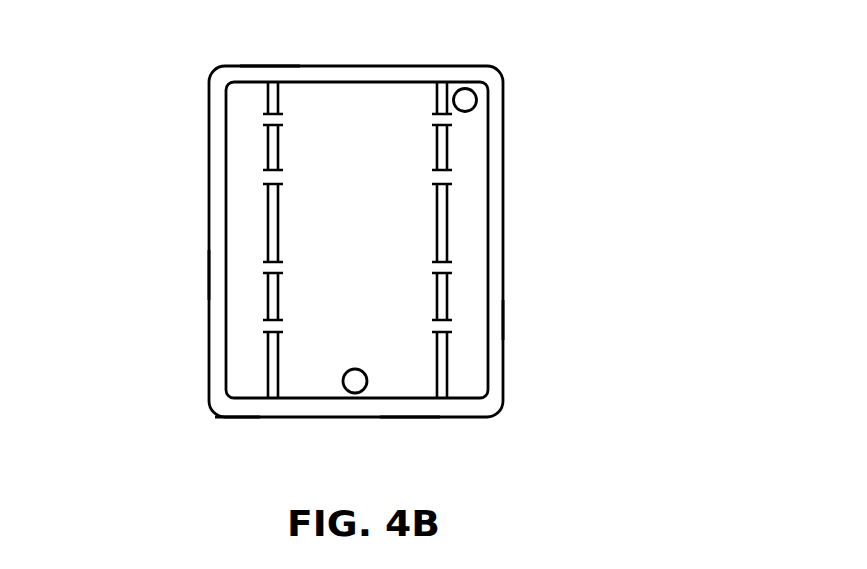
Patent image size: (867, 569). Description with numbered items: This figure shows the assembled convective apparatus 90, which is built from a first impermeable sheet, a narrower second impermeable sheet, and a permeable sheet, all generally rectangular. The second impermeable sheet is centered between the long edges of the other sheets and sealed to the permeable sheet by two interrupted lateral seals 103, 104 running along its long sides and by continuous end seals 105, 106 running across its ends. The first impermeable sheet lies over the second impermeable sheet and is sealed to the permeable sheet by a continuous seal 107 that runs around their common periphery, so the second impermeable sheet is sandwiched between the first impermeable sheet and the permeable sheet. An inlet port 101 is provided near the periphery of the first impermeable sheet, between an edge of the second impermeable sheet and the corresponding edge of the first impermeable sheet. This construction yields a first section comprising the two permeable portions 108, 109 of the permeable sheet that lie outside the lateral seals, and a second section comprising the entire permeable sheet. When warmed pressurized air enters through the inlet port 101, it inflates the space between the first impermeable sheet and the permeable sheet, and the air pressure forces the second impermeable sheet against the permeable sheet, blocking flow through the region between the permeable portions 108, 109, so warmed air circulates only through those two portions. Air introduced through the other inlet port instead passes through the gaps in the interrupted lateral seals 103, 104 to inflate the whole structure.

The convective apparatus 90 is at (523, 170).
The inlet port 101 is at (468, 88).
The interrupted lateral seal 103 is at (275, 372).
The interrupted lateral seal 104 is at (445, 368).
The continuous end seal 105 is at (428, 417).
The continuous end seal 106 is at (367, 78).
The continuous seal 107 is at (256, 70).
The permeable portion 108 is at (237, 214).
The permeable portion 109 is at (467, 282).